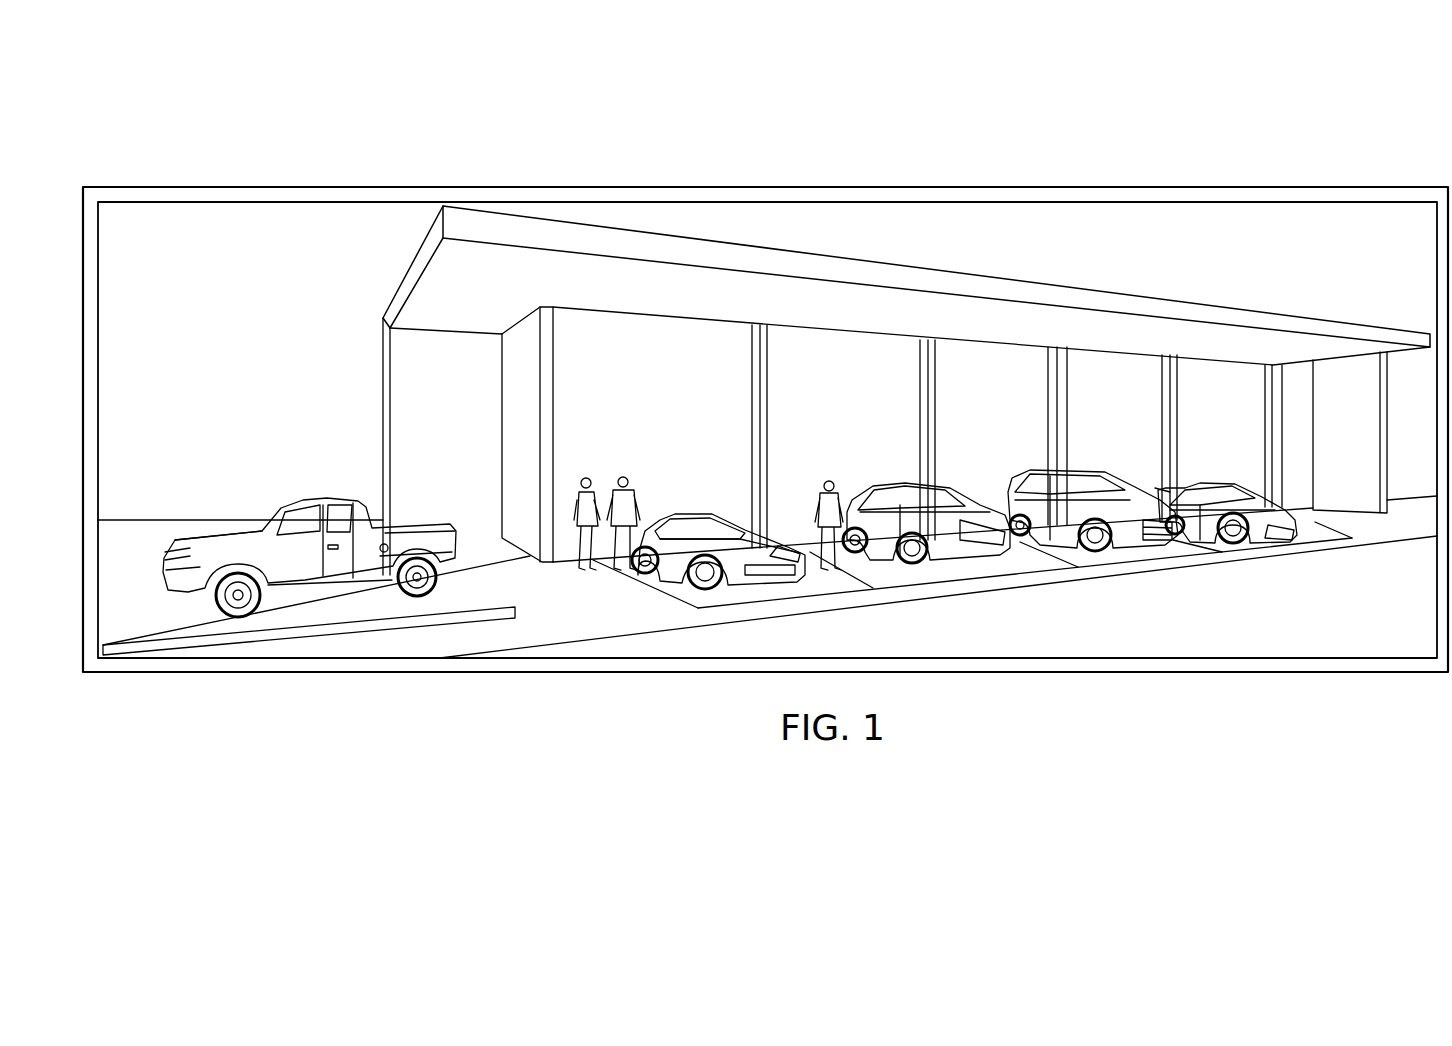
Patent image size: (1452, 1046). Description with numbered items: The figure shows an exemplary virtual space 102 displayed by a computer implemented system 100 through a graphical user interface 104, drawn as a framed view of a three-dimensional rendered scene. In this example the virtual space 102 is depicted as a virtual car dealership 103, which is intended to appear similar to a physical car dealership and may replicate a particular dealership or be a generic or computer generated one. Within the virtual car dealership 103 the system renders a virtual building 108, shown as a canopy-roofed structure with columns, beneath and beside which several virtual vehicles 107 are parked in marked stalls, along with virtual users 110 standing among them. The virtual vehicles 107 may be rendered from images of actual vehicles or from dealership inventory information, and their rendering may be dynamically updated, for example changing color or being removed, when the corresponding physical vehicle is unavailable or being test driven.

The computer implemented system 100 is at (291, 152).
The virtual space 102 is at (1160, 220).
The virtual car dealership 103 is at (1270, 220).
The graphical user interface 104 is at (1360, 673).
The virtual vehicle 107 is at (1020, 478).
The virtual building 108 is at (975, 275).
The virtual user 110 is at (828, 484).